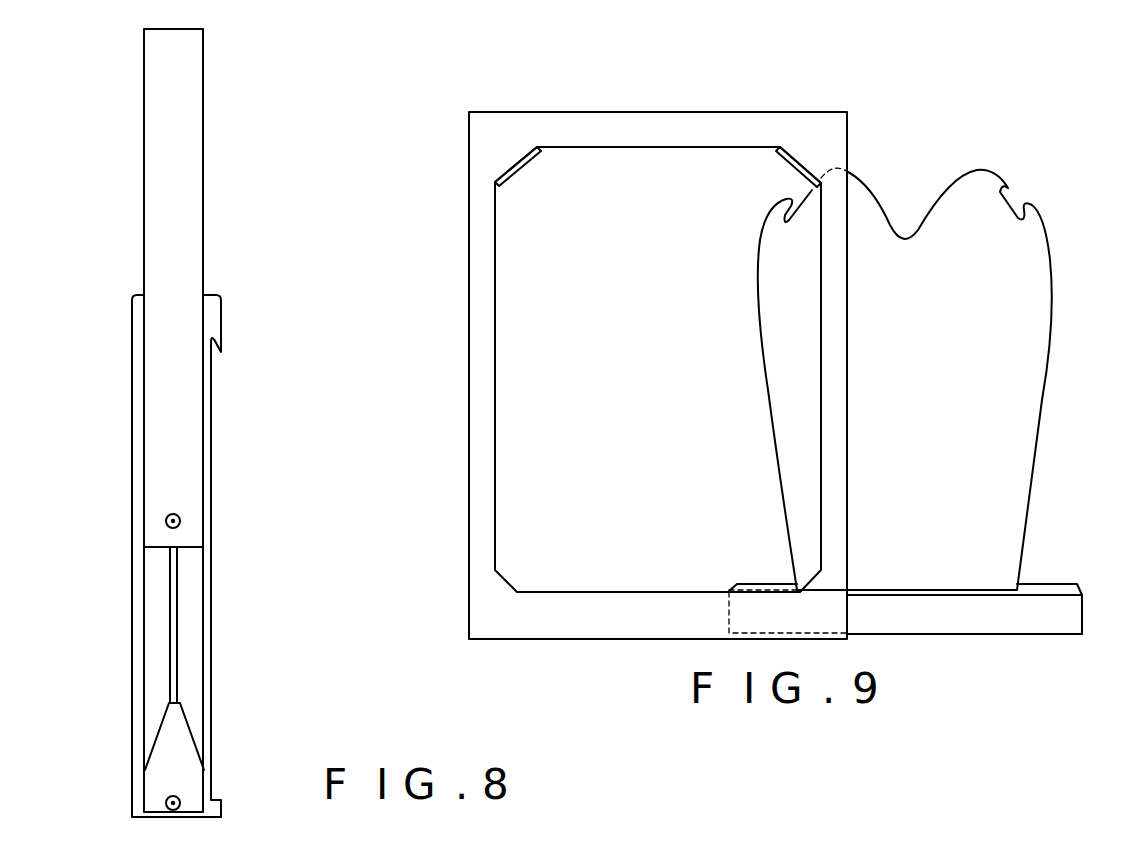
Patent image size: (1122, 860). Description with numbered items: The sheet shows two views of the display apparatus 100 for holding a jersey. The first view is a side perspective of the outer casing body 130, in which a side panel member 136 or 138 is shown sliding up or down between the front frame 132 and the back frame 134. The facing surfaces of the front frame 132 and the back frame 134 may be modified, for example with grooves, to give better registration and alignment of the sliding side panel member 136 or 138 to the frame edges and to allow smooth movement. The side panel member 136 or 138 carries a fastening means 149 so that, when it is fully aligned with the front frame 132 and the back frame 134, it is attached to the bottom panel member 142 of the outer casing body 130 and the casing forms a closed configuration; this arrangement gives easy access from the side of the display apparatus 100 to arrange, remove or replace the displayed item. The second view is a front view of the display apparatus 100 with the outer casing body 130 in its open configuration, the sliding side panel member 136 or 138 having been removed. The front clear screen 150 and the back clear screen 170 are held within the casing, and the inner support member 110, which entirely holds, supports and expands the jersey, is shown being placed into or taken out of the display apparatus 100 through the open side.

In FIG. 9, the display apparatus 100 is at (702, 338).
In FIG. 9, the inner support member 110 is at (961, 284).
In FIG. 8, the outer casing body 130 is at (170, 556).
In FIG. 9, the outer casing body 130 is at (816, 137).
In FIG. 8, the front frame 132 is at (139, 612).
In FIG. 8, the back frame 134 is at (213, 622).
In FIG. 8, the side panel member 136 is at (234, 420).
In FIG. 8, the side panel member 138 is at (181, 87).
In FIG. 8, the bottom panel member 142 is at (179, 741).
In FIG. 8, the fastening means 149 is at (181, 511).
In FIG. 9, the front clear screen 150 is at (572, 369).
In FIG. 9, the back clear screen 170 is at (559, 317).